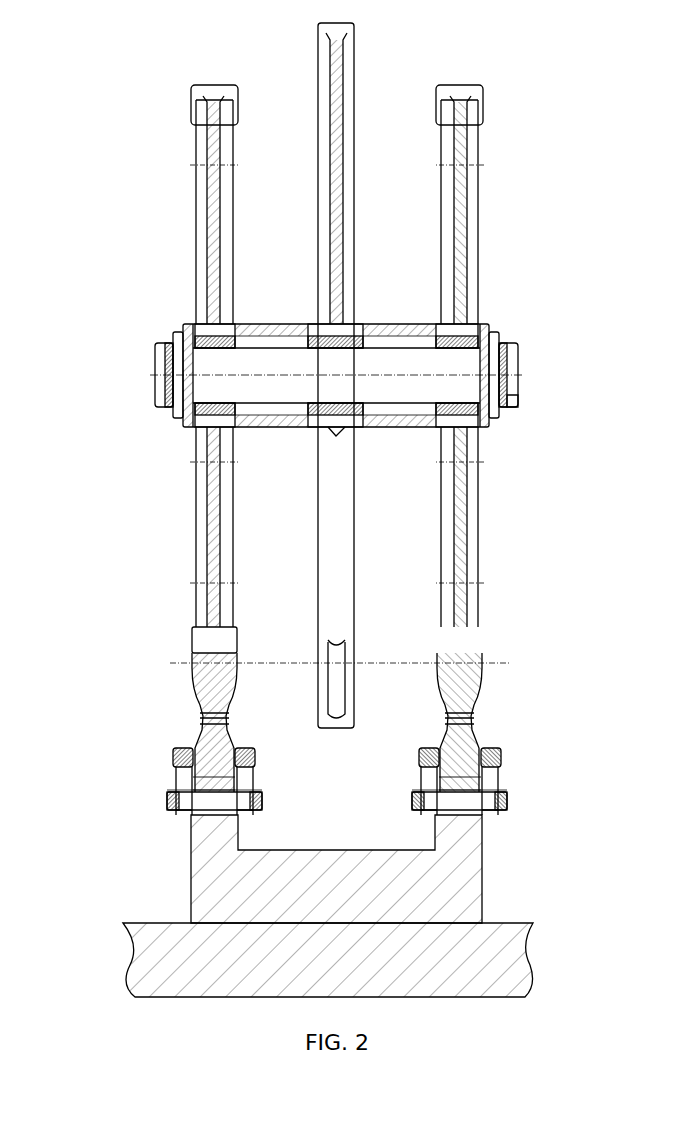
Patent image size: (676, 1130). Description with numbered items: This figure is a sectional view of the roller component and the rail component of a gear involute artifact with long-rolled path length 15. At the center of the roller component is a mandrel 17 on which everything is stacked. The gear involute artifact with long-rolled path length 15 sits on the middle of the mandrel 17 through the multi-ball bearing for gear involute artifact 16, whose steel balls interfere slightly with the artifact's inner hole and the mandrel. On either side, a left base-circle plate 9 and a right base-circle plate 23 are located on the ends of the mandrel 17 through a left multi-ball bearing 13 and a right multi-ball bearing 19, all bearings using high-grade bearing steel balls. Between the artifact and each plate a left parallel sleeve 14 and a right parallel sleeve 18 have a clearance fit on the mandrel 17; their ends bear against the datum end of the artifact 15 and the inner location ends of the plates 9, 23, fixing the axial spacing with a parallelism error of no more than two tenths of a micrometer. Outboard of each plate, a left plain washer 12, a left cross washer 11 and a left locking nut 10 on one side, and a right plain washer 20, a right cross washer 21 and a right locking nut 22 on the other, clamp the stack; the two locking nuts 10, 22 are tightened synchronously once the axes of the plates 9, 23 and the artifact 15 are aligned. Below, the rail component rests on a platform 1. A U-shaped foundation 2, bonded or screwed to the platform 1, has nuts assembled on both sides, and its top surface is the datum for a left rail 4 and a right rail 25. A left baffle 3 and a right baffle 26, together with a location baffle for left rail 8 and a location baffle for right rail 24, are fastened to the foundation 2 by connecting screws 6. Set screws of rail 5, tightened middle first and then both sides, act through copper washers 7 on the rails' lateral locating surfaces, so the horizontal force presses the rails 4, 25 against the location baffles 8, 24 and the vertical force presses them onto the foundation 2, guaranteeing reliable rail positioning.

The platform 1 is at (148, 958).
The foundation 2 is at (197, 912).
The left baffle 3 is at (175, 800).
The left rail 4 is at (207, 747).
The set screw of rail 5 is at (170, 795).
The connecting screw 6 is at (172, 770).
The copper washer 7 is at (177, 755).
The location baffle for left rail 8 is at (183, 812).
The left base-circle plate 9 is at (220, 655).
The left locking nut 10 is at (160, 385).
The left cross washer 11 is at (166, 360).
The left plain washer 12 is at (178, 345).
The left multi-ball bearing 13 is at (188, 328).
The left parallel sleeve 14 is at (248, 333).
The gear involute artifact with long-rolled path length 15 is at (330, 252).
The multi-ball bearing for gear involute artifact 16 is at (373, 362).
The mandrel 17 is at (420, 343).
The right parallel sleeve 18 is at (487, 353).
The right multi-ball bearing 19 is at (500, 345).
The right plain washer 20 is at (505, 365).
The right cross washer 21 is at (512, 385).
The right locking nut 22 is at (512, 402).
The right base-circle plate 23 is at (463, 610).
The location baffle for right rail 24 is at (460, 740).
The right rail 25 is at (472, 757).
The right baffle 26 is at (487, 777).